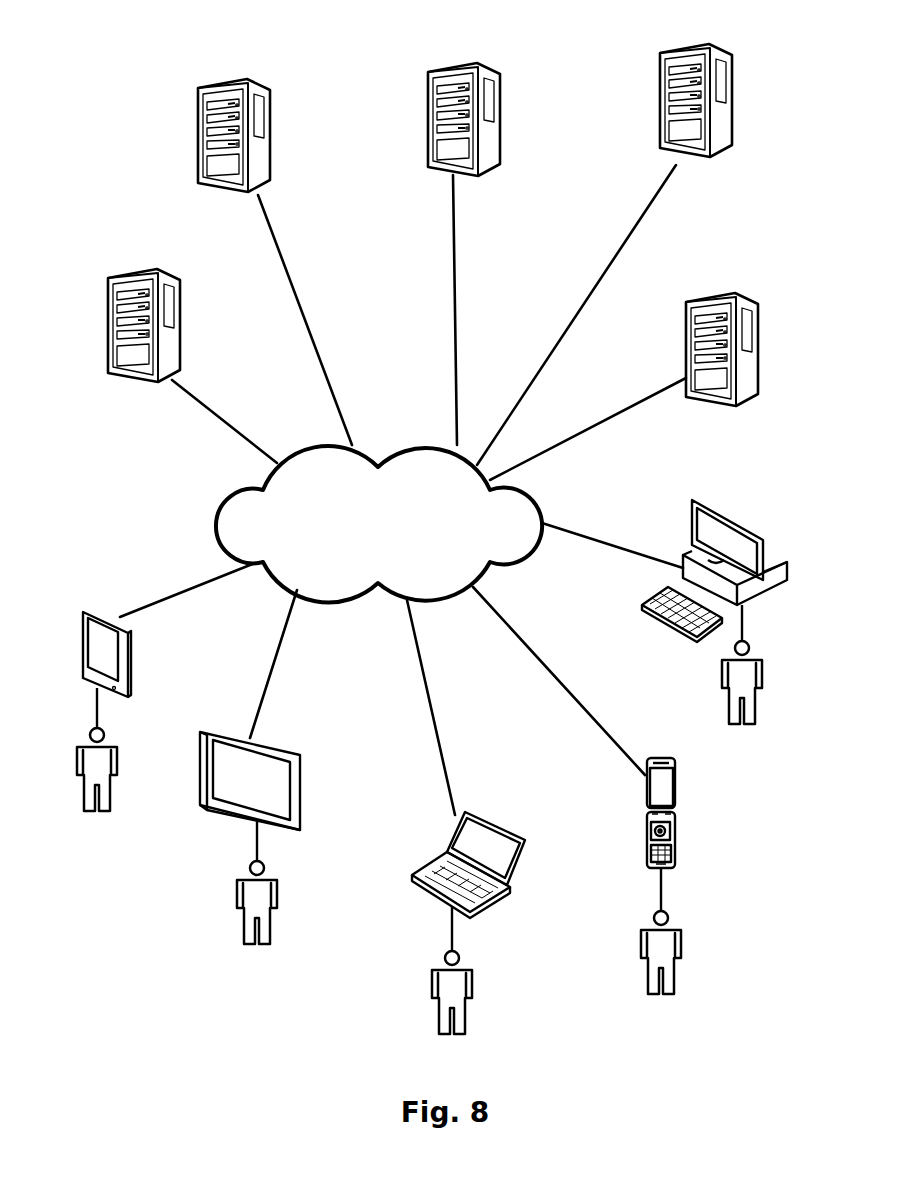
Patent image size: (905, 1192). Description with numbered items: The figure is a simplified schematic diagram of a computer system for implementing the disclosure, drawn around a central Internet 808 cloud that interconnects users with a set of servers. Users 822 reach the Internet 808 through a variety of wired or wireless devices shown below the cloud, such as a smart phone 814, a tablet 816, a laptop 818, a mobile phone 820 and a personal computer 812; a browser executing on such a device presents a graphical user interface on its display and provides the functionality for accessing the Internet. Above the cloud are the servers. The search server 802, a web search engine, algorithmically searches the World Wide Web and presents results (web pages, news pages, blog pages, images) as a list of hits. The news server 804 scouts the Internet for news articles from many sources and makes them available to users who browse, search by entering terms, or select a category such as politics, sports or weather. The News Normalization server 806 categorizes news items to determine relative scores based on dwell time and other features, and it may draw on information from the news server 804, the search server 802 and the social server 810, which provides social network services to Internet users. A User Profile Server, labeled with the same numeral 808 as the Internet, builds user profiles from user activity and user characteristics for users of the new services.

The search server 802 is at (120, 340).
The news server 804 is at (487, 128).
The News Normalization server 806 is at (258, 147).
The Internet 808 is at (228, 520).
The social server 810 is at (745, 375).
The personal computer 812 is at (765, 570).
The smart phone 814 is at (112, 655).
The tablet 816 is at (280, 778).
The laptop 818 is at (500, 860).
The mobile phone 820 is at (667, 787).
The users 822 is at (106, 798).